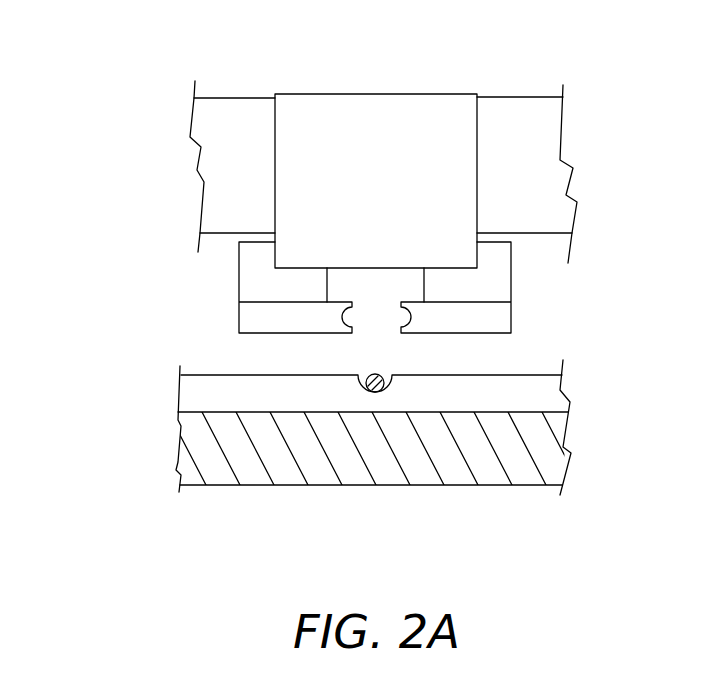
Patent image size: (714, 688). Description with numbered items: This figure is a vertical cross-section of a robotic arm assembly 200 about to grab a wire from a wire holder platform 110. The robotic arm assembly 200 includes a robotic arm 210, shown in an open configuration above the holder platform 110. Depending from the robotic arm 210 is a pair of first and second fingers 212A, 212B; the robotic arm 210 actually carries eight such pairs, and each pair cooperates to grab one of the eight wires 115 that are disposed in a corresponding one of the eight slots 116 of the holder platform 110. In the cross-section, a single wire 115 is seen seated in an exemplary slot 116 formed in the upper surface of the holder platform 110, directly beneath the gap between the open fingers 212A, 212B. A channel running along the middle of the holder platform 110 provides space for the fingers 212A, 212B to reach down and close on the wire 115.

The robotic arm assembly 200 is at (140, 60).
The robotic arm 210 is at (440, 93).
The first finger 212A is at (239, 312).
The second finger 212B is at (511, 318).
The wire 115 is at (357, 373).
The slot 116 is at (390, 373).
The holder platform 110 is at (322, 487).